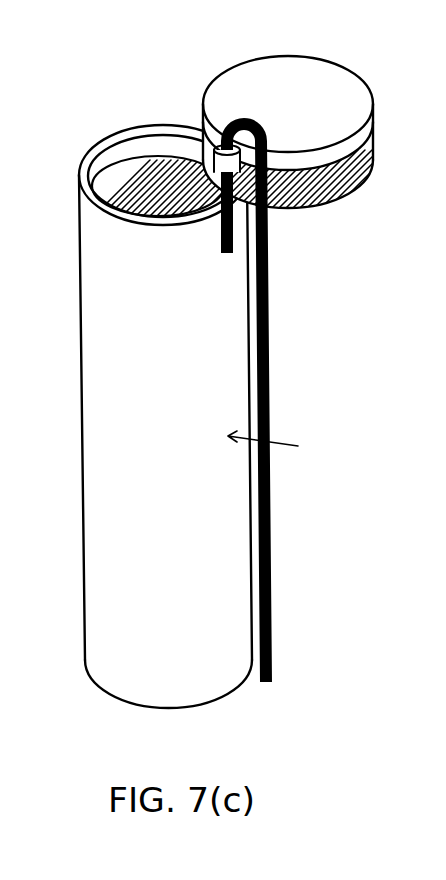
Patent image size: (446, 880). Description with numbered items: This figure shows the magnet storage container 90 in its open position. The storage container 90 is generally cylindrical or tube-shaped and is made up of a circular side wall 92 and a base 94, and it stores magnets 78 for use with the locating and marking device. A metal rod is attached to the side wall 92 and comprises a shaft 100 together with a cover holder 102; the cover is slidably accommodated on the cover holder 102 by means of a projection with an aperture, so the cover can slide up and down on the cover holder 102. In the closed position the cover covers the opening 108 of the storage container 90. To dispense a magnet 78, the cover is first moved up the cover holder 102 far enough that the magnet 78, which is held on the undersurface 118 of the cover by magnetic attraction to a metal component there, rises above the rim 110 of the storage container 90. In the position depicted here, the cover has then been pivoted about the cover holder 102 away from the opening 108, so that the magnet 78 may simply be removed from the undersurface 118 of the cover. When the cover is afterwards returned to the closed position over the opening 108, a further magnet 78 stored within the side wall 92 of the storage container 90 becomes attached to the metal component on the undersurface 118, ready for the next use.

The magnet 78 is at (153, 165).
The storage container 90 is at (285, 444).
The side wall 92 is at (217, 590).
The base 94 is at (233, 688).
The shaft 100 is at (273, 389).
The cover holder 102 is at (235, 242).
The opening 108 is at (111, 150).
The rim 110 is at (110, 212).
The undersurface 118 is at (367, 148).